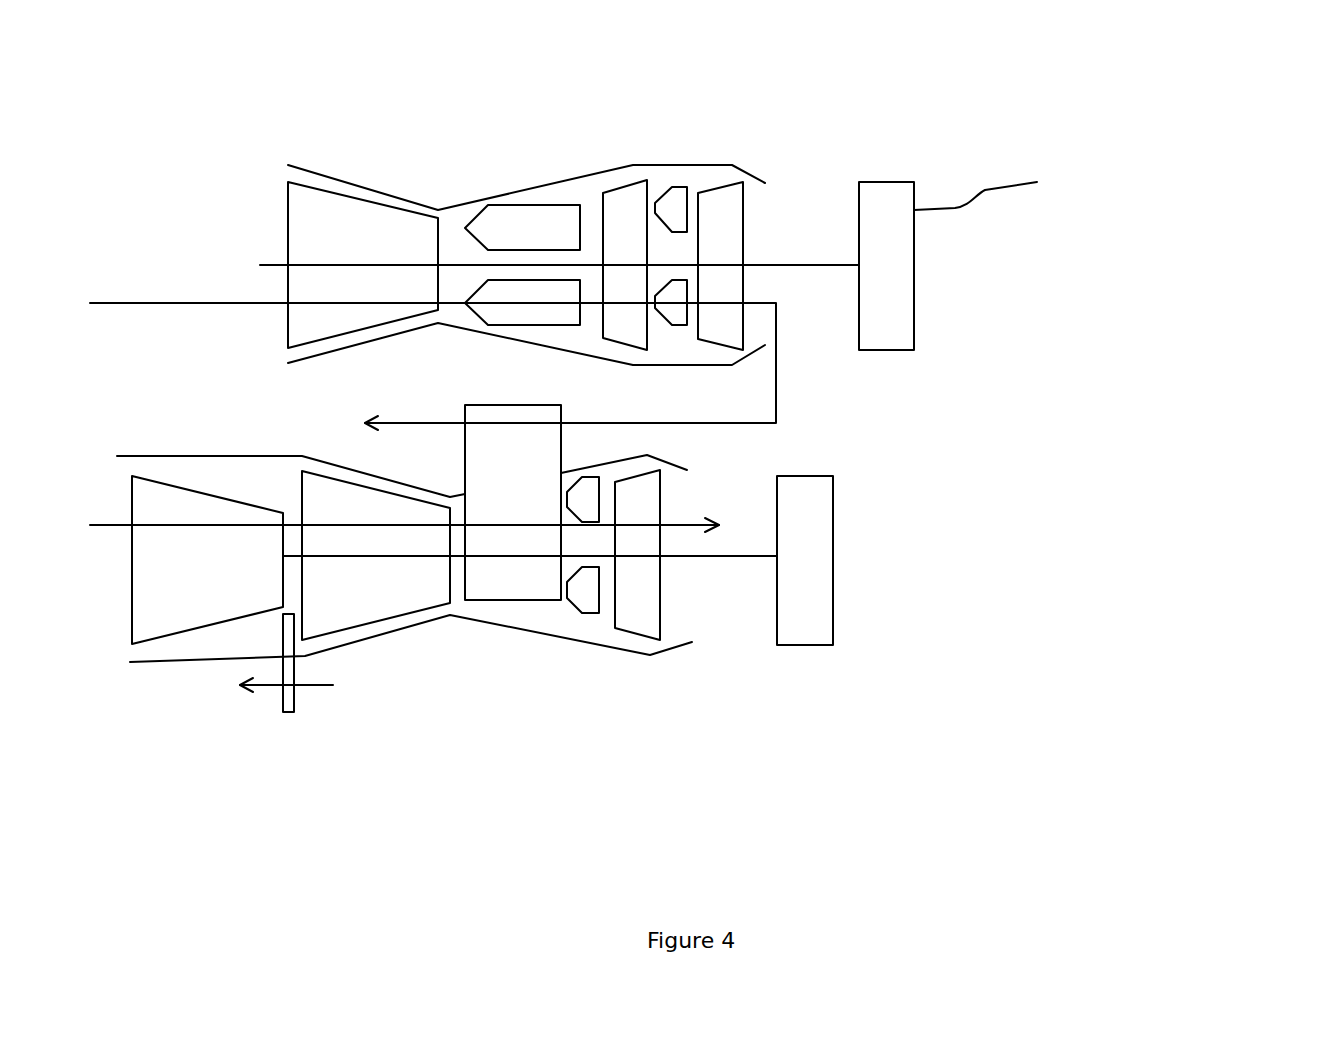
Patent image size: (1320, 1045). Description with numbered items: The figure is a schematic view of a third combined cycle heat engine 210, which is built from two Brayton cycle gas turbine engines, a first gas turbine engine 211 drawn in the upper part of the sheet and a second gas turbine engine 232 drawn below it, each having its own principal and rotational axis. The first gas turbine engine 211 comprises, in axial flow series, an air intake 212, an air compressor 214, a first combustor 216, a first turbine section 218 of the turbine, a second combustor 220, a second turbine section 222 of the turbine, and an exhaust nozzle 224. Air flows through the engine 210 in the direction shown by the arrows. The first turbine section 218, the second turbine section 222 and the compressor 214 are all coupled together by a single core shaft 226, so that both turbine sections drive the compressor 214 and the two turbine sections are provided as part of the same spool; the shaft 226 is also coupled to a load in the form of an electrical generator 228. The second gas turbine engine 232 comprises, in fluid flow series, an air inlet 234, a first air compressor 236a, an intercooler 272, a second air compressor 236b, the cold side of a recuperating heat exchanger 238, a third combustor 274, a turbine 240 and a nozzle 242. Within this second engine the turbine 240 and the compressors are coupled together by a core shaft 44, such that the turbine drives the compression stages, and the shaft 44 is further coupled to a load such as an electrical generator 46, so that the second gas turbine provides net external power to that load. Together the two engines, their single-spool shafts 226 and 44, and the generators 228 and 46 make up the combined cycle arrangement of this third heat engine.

The third combined cycle heat engine 210 is at (1128, 393).
The first gas turbine engine 211 is at (784, 113).
The air intake 212 is at (260, 335).
The air compressor 214 is at (300, 230).
The first combustor 216 is at (484, 203).
The first turbine section 218 is at (626, 185).
The second combustor 220 is at (670, 185).
The second turbine section 222 is at (750, 210).
The exhaust nozzle 224 is at (778, 212).
The core shaft 226 is at (465, 260).
The electrical generator 228 is at (1009, 190).
The second gas turbine engine 232 is at (530, 712).
The air inlet 234 is at (117, 640).
The first air compressor 236a is at (153, 613).
The second air compressor 236b is at (377, 613).
The recuperating heat exchanger 238 is at (553, 600).
The turbine 240 is at (662, 583).
The nozzle 242 is at (697, 647).
The intercooler 272 is at (288, 712).
The third combustor 274 is at (583, 602).
The core shaft 44 is at (743, 556).
The electrical generator 46 is at (833, 601).